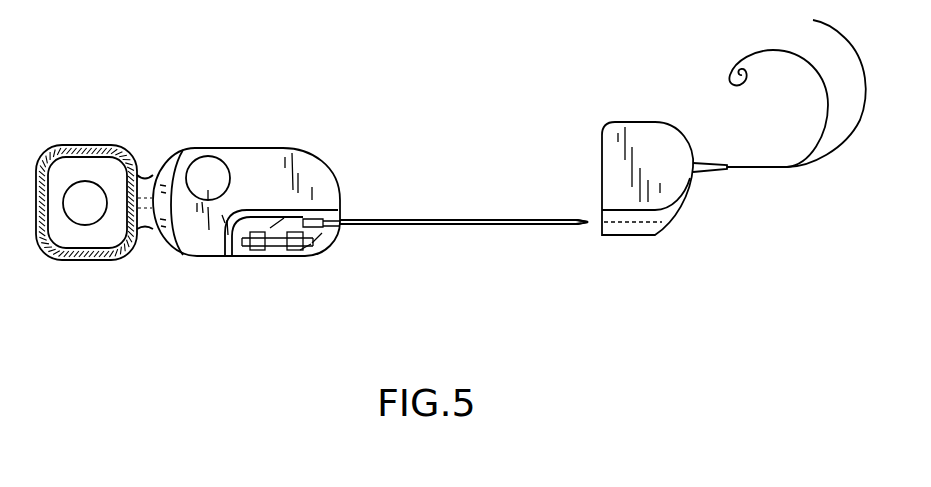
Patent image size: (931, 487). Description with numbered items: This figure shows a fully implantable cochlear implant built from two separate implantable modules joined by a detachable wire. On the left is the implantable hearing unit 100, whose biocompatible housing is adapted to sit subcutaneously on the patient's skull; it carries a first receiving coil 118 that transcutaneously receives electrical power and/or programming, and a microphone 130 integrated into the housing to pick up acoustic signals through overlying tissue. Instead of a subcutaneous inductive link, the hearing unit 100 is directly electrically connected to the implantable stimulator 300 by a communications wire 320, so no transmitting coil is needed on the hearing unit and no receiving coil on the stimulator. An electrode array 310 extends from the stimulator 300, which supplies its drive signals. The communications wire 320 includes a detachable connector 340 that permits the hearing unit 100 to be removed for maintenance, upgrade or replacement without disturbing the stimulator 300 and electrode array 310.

The implantable hearing unit 100 is at (208, 266).
The first receiving coil 118 is at (102, 167).
The microphone 130 is at (228, 170).
The implantable stimulator 300 is at (641, 137).
The electrode array 310 is at (775, 168).
The communications wire 320 is at (443, 220).
The detachable connector 340 is at (588, 225).